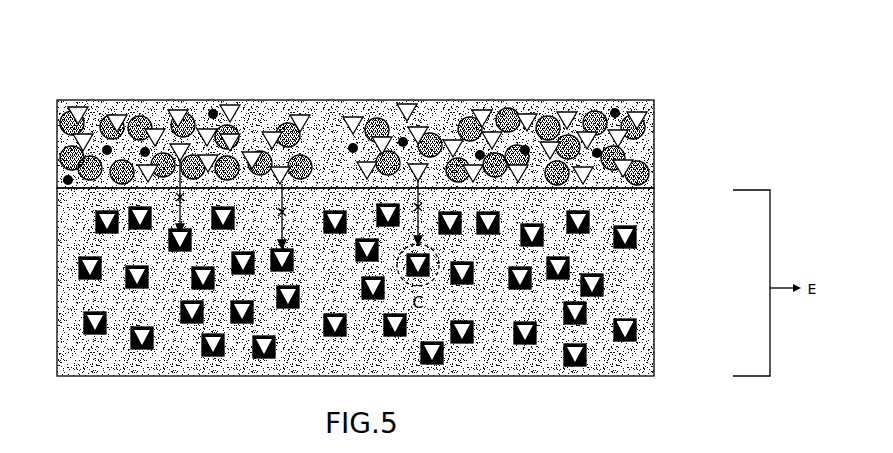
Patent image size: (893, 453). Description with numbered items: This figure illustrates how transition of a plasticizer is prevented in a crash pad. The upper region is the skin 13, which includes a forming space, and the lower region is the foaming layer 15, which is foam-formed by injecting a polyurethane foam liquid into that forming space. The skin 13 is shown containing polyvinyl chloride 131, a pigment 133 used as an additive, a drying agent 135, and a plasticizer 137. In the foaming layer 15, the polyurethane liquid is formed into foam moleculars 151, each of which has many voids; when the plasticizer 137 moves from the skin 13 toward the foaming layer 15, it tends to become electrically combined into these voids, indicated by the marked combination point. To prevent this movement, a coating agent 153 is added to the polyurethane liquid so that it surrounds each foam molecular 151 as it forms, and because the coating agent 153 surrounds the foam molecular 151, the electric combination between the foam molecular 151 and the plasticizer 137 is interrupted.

The skin 13 is at (52, 102).
The foaming layer 15 is at (52, 192).
The polyvinyl chloride 131 is at (278, 115).
The pigment 133 is at (213, 108).
The drying agent 135 is at (443, 113).
The plasticizer 137 is at (350, 113).
The foam molecular 151 is at (640, 338).
The coating agent 153 is at (638, 318).